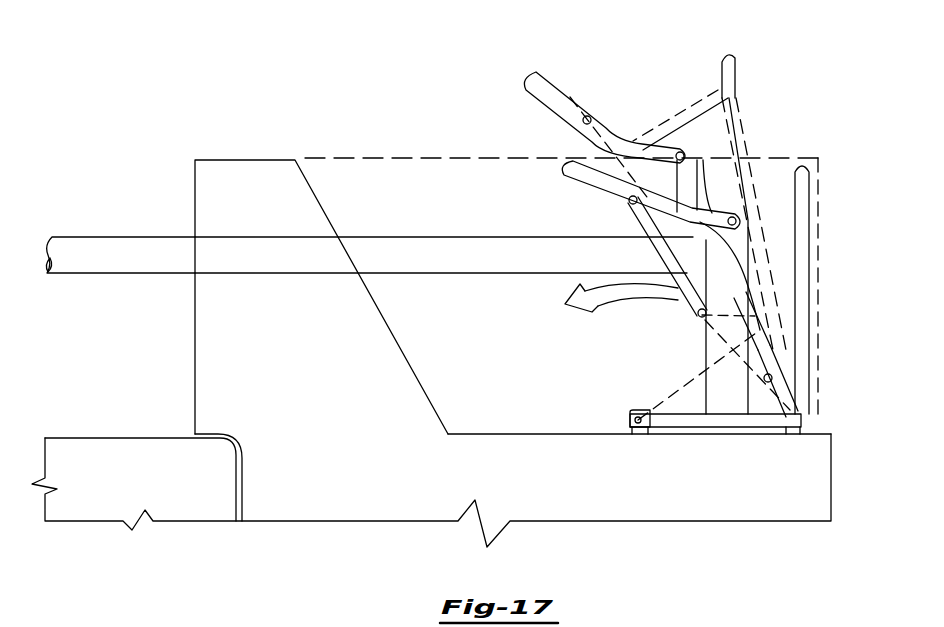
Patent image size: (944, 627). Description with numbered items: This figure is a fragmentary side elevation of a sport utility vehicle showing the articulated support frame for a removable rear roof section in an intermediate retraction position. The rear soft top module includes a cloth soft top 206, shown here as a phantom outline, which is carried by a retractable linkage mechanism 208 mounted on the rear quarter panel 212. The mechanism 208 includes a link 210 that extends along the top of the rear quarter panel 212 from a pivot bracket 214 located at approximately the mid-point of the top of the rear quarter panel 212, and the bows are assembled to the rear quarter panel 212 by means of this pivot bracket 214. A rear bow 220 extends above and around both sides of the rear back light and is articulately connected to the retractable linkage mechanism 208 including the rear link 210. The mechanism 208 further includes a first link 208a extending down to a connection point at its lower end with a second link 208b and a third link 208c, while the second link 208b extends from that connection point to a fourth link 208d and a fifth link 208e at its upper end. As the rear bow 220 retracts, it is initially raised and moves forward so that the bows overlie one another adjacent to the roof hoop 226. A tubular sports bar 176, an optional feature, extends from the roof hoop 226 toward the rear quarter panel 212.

The tubular sports bar 176 is at (407, 237).
The cloth soft top 206 is at (432, 156).
The retractable linkage mechanism 208 is at (704, 246).
The first link 208a is at (745, 355).
The second link 208b is at (762, 340).
The third link 208c is at (778, 395).
The fourth link 208d is at (626, 134).
The fifth link 208e is at (689, 175).
The link 210 is at (729, 427).
The rear quarter panel 212 is at (553, 434).
The pivot bracket 214 is at (643, 430).
The rear bow 220 is at (745, 70).
The roof hoop 226 is at (242, 160).